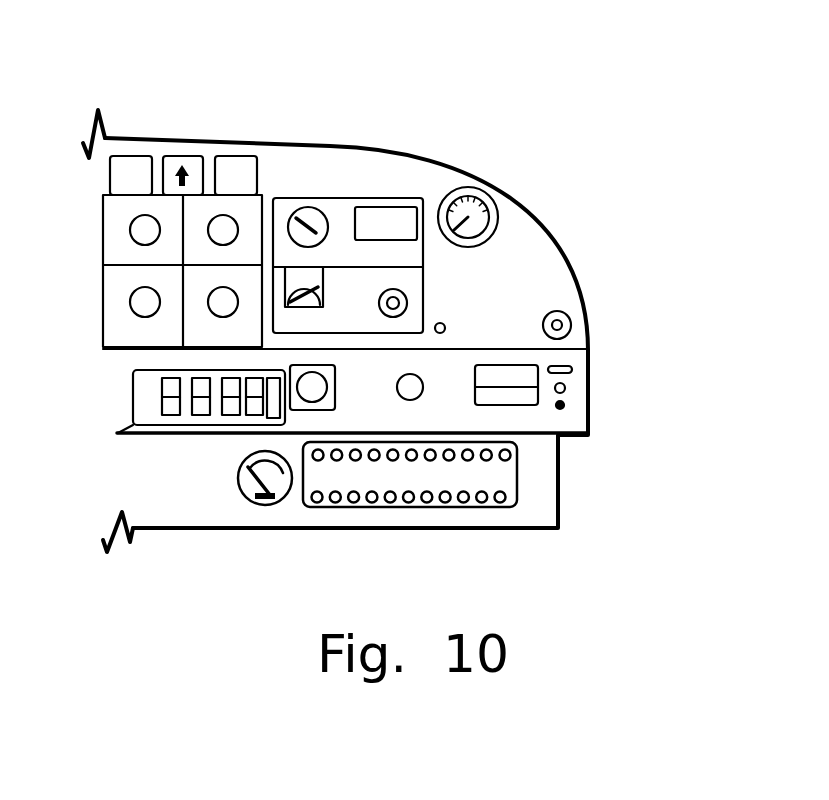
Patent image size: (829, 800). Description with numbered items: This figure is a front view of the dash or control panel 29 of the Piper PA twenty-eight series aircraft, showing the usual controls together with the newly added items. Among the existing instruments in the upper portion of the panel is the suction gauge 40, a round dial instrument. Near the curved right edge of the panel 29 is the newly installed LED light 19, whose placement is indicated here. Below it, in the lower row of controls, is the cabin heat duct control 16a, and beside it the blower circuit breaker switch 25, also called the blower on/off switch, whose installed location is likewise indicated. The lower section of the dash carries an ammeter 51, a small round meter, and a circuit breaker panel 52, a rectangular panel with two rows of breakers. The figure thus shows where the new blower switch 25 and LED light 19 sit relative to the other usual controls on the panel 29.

The control panel 29 is at (409, 133).
The suction gauge 40 is at (488, 189).
The LED light 19 is at (570, 313).
The blower circuit breaker switch 25 is at (567, 386).
The cabin heat duct control 16a is at (530, 400).
The circuit breaker panel 52 is at (517, 495).
The ammeter 51 is at (247, 499).